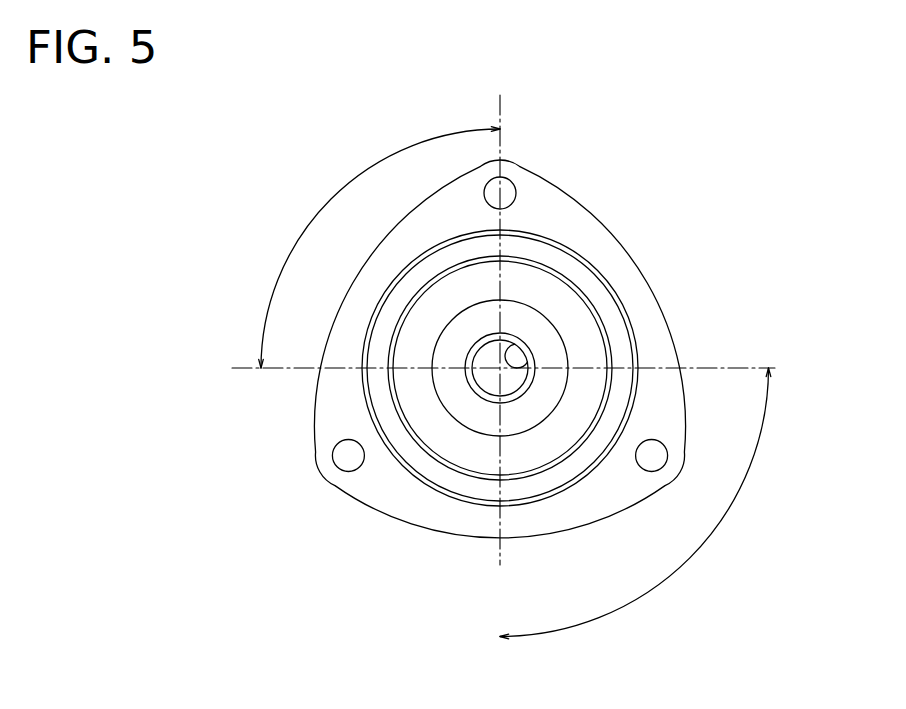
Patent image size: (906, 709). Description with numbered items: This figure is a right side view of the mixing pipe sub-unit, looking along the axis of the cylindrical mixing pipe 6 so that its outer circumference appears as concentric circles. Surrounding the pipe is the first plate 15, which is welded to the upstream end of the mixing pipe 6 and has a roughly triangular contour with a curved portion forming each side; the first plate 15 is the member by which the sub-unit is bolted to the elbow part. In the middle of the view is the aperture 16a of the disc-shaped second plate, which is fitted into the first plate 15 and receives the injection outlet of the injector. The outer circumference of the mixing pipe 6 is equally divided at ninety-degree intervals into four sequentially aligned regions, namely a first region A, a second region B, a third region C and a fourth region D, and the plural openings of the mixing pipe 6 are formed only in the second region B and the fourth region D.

The first plate 15 is at (557, 220).
The mixing pipe 6 is at (620, 300).
The aperture 16a is at (545, 362).
The first region A is at (678, 213).
The second region B is at (352, 184).
The third region C is at (365, 517).
The fourth region D is at (713, 530).